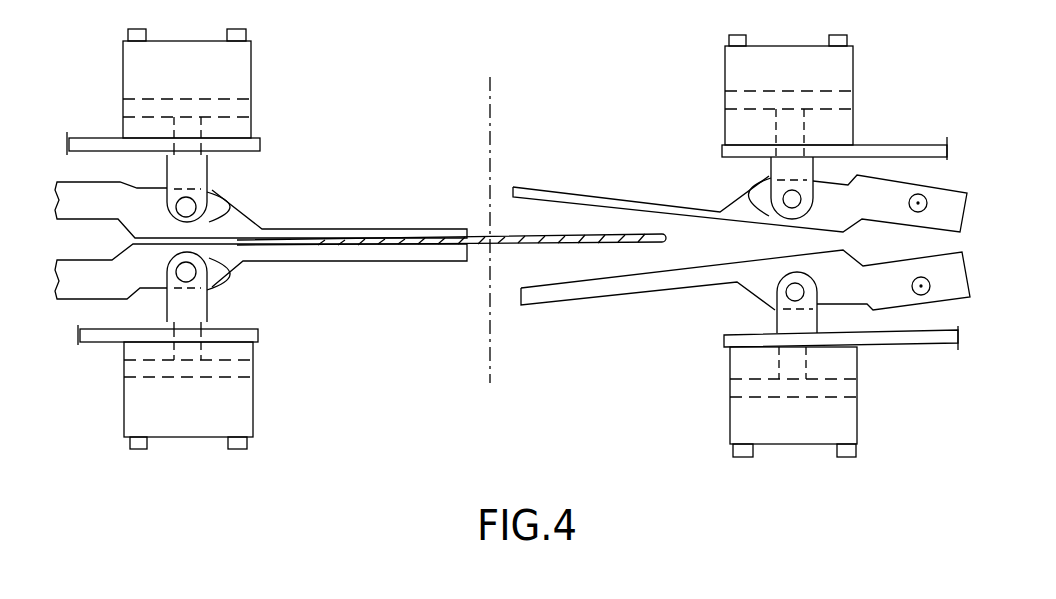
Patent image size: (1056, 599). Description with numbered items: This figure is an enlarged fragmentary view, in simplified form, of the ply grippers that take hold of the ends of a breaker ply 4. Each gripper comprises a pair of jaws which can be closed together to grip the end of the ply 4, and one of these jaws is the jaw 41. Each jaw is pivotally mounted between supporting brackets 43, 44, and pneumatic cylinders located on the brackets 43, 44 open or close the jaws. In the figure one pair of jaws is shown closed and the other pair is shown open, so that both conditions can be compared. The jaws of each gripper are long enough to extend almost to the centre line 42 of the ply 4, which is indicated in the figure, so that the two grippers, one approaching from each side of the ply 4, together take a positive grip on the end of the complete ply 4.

The breaker ply 4 is at (512, 243).
The jaw 41 is at (567, 195).
The centre line 42 is at (493, 355).
The supporting bracket 43 is at (930, 147).
The supporting bracket 44 is at (927, 338).